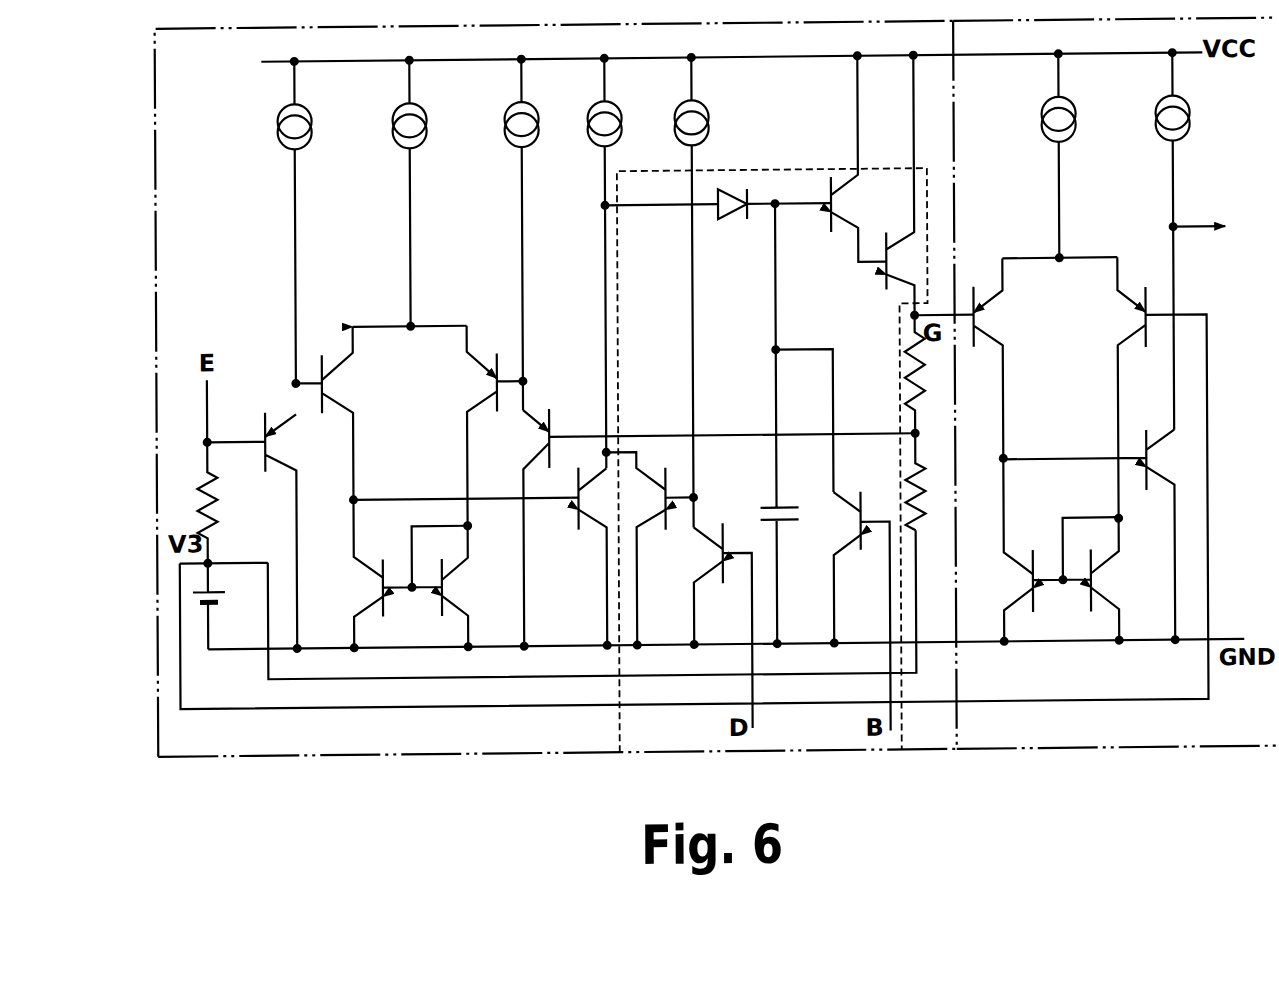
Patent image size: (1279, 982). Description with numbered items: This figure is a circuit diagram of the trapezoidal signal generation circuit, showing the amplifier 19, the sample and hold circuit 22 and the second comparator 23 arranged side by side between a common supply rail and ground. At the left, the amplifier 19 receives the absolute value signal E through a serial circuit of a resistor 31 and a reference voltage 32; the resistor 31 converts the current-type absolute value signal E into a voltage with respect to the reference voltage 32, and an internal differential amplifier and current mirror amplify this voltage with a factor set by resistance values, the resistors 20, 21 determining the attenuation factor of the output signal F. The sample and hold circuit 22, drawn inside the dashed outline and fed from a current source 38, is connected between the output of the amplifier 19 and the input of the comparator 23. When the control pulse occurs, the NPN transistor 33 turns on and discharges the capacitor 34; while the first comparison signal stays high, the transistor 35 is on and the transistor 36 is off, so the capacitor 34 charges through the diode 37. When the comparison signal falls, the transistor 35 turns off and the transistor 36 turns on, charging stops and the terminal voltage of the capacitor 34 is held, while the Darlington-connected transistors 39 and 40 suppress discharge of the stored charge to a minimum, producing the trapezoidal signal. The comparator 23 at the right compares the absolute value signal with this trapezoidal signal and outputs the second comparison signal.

The amplifier 19 is at (153, 297).
The resistor 20 is at (928, 503).
The resistor 21 is at (927, 380).
The sample and hold circuit 22 is at (760, 168).
The second comparator 23 is at (1047, 751).
The resistor 31 is at (222, 504).
The reference voltage 32 is at (216, 601).
The NPN transistor 33 is at (838, 542).
The capacitor 34 is at (760, 513).
The transistor 35 is at (710, 583).
The transistor 36 is at (650, 528).
The diode 37 is at (735, 221).
The current source 38 is at (588, 136).
The Darlington-connected transistor 39 is at (843, 235).
The Darlington-connected transistor 40 is at (897, 288).